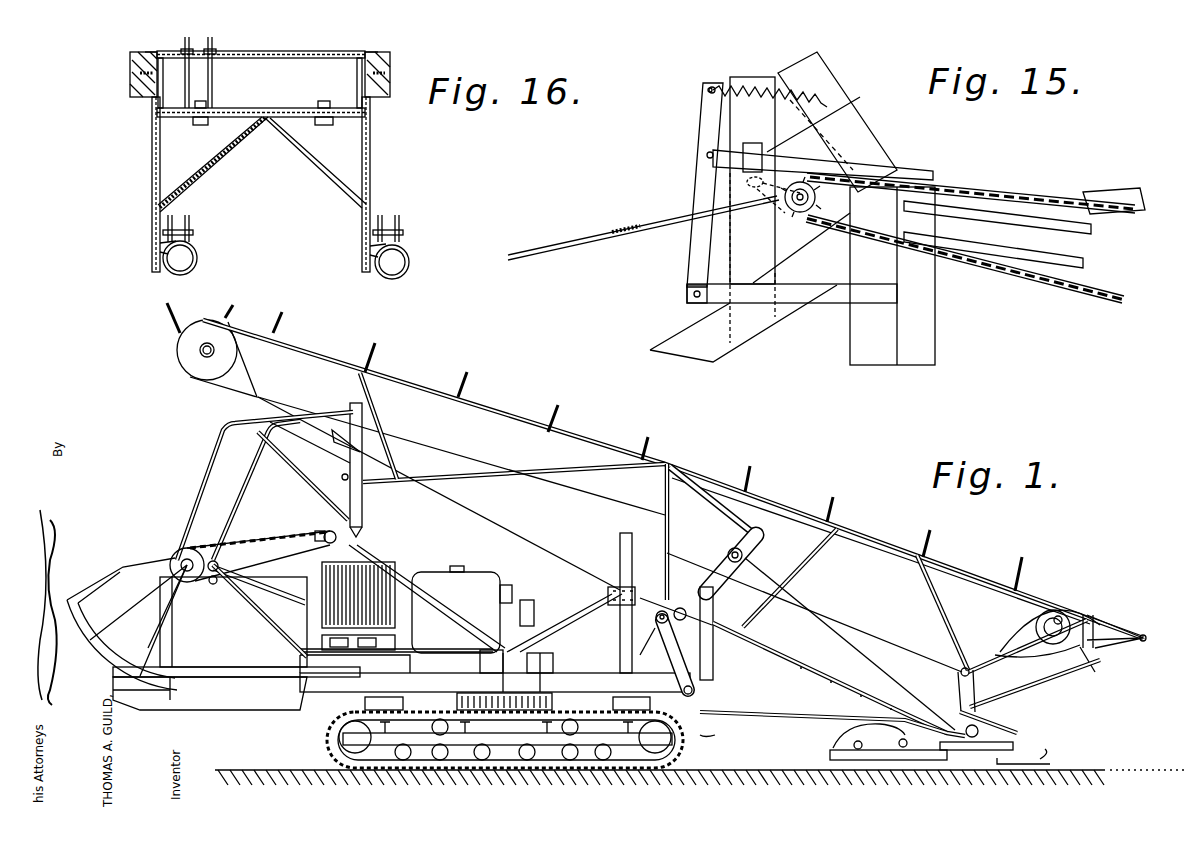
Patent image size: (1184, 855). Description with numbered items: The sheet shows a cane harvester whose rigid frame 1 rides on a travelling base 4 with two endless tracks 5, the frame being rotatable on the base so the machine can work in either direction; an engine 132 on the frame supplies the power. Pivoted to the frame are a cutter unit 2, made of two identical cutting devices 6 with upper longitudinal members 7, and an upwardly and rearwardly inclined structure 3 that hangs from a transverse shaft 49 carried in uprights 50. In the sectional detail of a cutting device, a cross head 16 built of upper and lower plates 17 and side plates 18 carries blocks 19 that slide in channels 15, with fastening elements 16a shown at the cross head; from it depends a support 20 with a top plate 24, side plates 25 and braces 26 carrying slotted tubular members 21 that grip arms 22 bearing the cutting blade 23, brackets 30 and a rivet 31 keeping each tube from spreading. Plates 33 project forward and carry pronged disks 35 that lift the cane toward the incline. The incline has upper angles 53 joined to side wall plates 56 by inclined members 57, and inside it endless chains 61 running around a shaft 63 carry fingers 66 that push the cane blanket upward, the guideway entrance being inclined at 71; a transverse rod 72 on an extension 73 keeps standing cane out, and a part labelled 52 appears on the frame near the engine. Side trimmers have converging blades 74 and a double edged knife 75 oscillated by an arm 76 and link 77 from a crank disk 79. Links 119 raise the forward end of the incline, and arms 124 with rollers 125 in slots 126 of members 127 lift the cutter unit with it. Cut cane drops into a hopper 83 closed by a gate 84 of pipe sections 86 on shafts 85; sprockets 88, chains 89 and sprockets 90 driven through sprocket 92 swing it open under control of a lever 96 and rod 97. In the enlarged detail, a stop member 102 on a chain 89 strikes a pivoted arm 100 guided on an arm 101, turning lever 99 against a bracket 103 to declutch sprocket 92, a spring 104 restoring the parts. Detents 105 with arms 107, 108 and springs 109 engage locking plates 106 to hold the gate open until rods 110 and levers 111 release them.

In FIG. 1, the rigid frame 1 is at (330, 693).
In FIG. 1, the cutter unit 2 is at (772, 715).
In FIG. 1, the upwardly and rearwardly inclined structure 3 is at (610, 461).
In FIG. 1, the travelling base 4 is at (707, 741).
In FIG. 1, the endless tracks 5 is at (330, 736).
In FIG. 1, the cutting devices 6 is at (748, 717).
In FIG. 1, the upper longitudinally extending members 7 is at (800, 666).
In FIG. 16, the channels 15 is at (130, 54).
In FIG. 16, the cross head 16 is at (273, 49).
In FIG. 16, the bolt 16a is at (183, 46).
In FIG. 16, the upper and lower plates 17 is at (333, 45).
In FIG. 16, the side plates 18 is at (153, 102).
In FIG. 16, the blocks 19 is at (131, 86).
In FIG. 16, the support 20 is at (371, 146).
In FIG. 1, the support 20 is at (835, 741).
In FIG. 16, the tubular members 21 is at (198, 254).
In FIG. 1, the tubular members 21 is at (866, 761).
In FIG. 1, the arms 22 is at (955, 760).
In FIG. 1, the cutting blade 23 is at (1052, 761).
In FIG. 16, the top plate 24 is at (226, 118).
In FIG. 16, the side plates 25 is at (152, 186).
In FIG. 16, the braces 26 is at (300, 159).
In FIG. 16, the upstanding brackets 30 is at (172, 216).
In FIG. 16, the rivet 31 is at (194, 231).
In FIG. 1, the plates 33 is at (925, 760).
In FIG. 1, the pronged disks 35 is at (1020, 766).
In FIG. 1, the transverse shaft 49 is at (363, 516).
In FIG. 1, the uprights 50 is at (340, 501).
In FIG. 1, the engine tank 52 is at (600, 581).
In FIG. 1, the upper angles 53 is at (503, 413).
In FIG. 1, the side wall plate 56 is at (505, 525).
In FIG. 1, the inclined angular members 57 is at (665, 486).
In FIG. 1, the endless chains 61 is at (575, 614).
In FIG. 1, the shaft 63 is at (210, 348).
In FIG. 1, the arms or fingers 66 is at (470, 377).
In FIG. 1, the upwardly inclined guideway members 71 is at (973, 569).
In FIG. 1, the transverse rod 72 is at (1116, 640).
In FIG. 1, the forwardly projecting extension 73 is at (1105, 649).
In FIG. 1, the rearwardly converging blades 74 is at (1010, 693).
In FIG. 1, the double edged knife 75 is at (1020, 734).
In FIG. 1, the arm 76 is at (960, 679).
In FIG. 1, the link 77 is at (1001, 651).
In FIG. 1, the crank disk 79 is at (1065, 618).
In FIG. 1, the hopper 83 is at (280, 661).
In FIG. 1, the cage or gate 84 is at (125, 571).
In FIG. 1, the shafts 85 is at (175, 551).
In FIG. 1, the sections of pipe 86 is at (118, 628).
In FIG. 1, the sprockets 88 is at (228, 521).
In FIG. 15, the sprocket chains 89 is at (1024, 197).
In FIG. 1, the sprocket chains 89 is at (255, 546).
In FIG. 1, the sprockets 90 is at (338, 538).
In FIG. 15, the sprocket 92 is at (810, 213).
In FIG. 15, the lever 96 is at (756, 196).
In FIG. 15, the rod 97 is at (572, 247).
In FIG. 15, the pivotally mounted lever 99 is at (702, 191).
In FIG. 15, the pivoted arm 100 is at (893, 168).
In FIG. 15, the arm 101 is at (735, 262).
In FIG. 15, the member 102 is at (1130, 213).
In FIG. 15, the bracket 103 is at (624, 234).
In FIG. 15, the spring 104 is at (760, 92).
In FIG. 1, the detents 105 is at (238, 576).
In FIG. 1, the locking plates 106 is at (165, 576).
In FIG. 1, the arm 107 is at (238, 496).
In FIG. 1, the arm 108 is at (160, 631).
In FIG. 1, the spring 109 is at (212, 586).
In FIG. 1, the rods 110 is at (248, 581).
In FIG. 1, the levers 111 is at (233, 622).
In FIG. 1, the links 119 is at (857, 717).
In FIG. 1, the upstanding rigid arms 124 is at (705, 661).
In FIG. 1, the rollers 125 is at (748, 553).
In FIG. 1, the slots 126 is at (750, 639).
In FIG. 1, the members 127 is at (735, 534).
In FIG. 1, the engine 132 is at (398, 564).